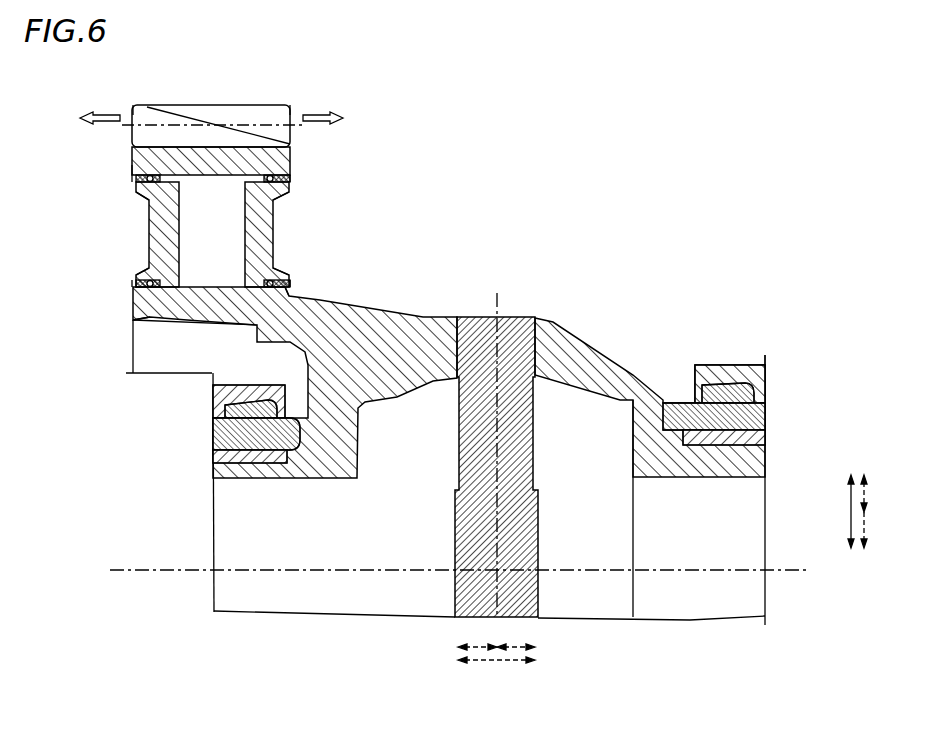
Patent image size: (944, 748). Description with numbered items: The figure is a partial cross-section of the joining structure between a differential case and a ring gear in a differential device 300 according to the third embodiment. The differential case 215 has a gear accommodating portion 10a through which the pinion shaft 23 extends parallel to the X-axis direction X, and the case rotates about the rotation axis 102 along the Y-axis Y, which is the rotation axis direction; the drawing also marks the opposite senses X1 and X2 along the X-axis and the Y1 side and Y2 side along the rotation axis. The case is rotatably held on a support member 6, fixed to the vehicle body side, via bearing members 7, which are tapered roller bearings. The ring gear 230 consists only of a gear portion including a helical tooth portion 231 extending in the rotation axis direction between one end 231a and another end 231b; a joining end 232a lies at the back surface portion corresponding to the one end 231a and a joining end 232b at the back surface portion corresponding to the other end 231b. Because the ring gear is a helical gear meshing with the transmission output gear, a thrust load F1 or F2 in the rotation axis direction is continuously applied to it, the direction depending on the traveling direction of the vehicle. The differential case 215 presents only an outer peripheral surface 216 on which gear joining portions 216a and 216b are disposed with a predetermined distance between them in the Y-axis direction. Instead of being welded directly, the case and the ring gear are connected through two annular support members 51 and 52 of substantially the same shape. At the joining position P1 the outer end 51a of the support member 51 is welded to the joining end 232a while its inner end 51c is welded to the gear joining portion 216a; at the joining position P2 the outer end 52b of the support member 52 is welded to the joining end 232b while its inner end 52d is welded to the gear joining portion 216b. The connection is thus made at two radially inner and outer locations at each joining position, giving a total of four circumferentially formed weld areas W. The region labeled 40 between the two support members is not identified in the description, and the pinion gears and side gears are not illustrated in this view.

The helical tooth portion 231 is at (200, 103).
The one end 231a is at (283, 108).
The another end 231b is at (140, 108).
The ring gear 230 is at (304, 139).
The joining end 232a is at (294, 163).
The joining end 232b is at (133, 170).
The weld areas W is at (136, 181).
The joining position P1 is at (300, 176).
The joining position P2 is at (122, 175).
The support member 52 is at (140, 228).
The outer end 52b is at (142, 199).
The inner end 52d is at (145, 268).
The support member 51 is at (284, 228).
The outer end 51a is at (288, 195).
The inner end 51c is at (285, 270).
The outer peripheral surface 216 is at (428, 318).
The gear joining portion 216a is at (292, 292).
The gear joining portion 216b is at (133, 320).
The chamber 40 is at (215, 284).
The support member 6 is at (213, 400).
The bearing members 7 is at (213, 440).
The rotation axis 102 is at (123, 568).
The pinion shaft 23 is at (538, 405).
The differential case 215 is at (588, 360).
The gear accommodating portion 10a is at (606, 398).
The differential device 300 is at (812, 114).
The thrust load F1 is at (321, 106).
The thrust load F2 is at (103, 106).
The X-axis direction X is at (841, 511).
The axial dimension X1 is at (883, 493).
The axial dimension X2 is at (883, 528).
The Y-axis Y is at (496, 672).
The Y1 side Y1 is at (516, 634).
The Y2 side Y2 is at (477, 634).